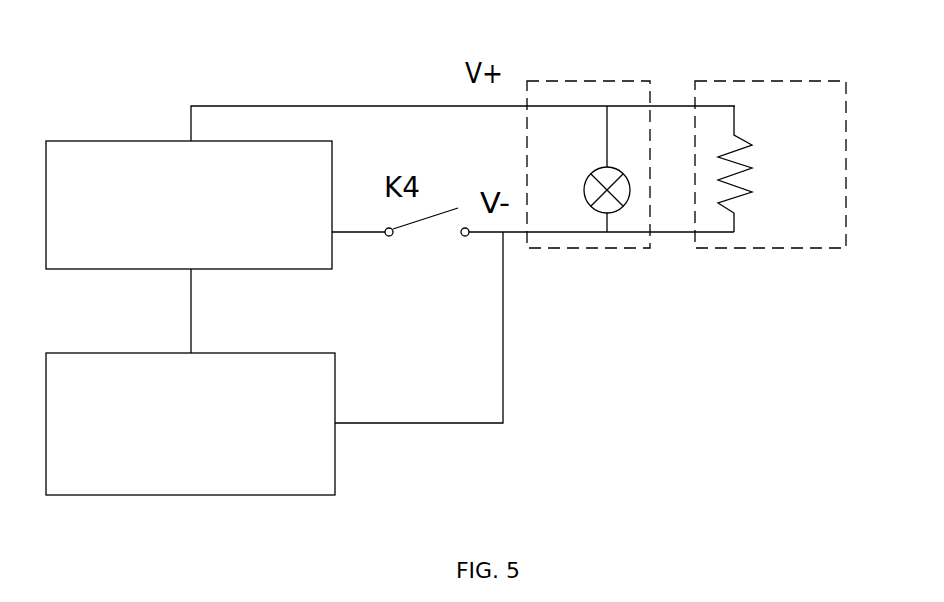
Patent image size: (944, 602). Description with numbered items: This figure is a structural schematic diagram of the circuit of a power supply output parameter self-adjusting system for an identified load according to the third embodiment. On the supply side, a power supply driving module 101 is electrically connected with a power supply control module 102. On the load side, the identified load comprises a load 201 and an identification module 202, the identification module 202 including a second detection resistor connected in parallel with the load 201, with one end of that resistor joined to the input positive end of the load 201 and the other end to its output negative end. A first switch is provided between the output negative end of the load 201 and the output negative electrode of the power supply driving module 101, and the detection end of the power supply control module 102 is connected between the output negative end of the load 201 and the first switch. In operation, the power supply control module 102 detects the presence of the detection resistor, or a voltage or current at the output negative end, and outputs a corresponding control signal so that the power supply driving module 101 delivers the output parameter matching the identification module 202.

The power supply driving module 101 is at (189, 205).
The power supply control module 102 is at (190, 424).
The load 201 is at (590, 81).
The identification module 202 is at (766, 81).